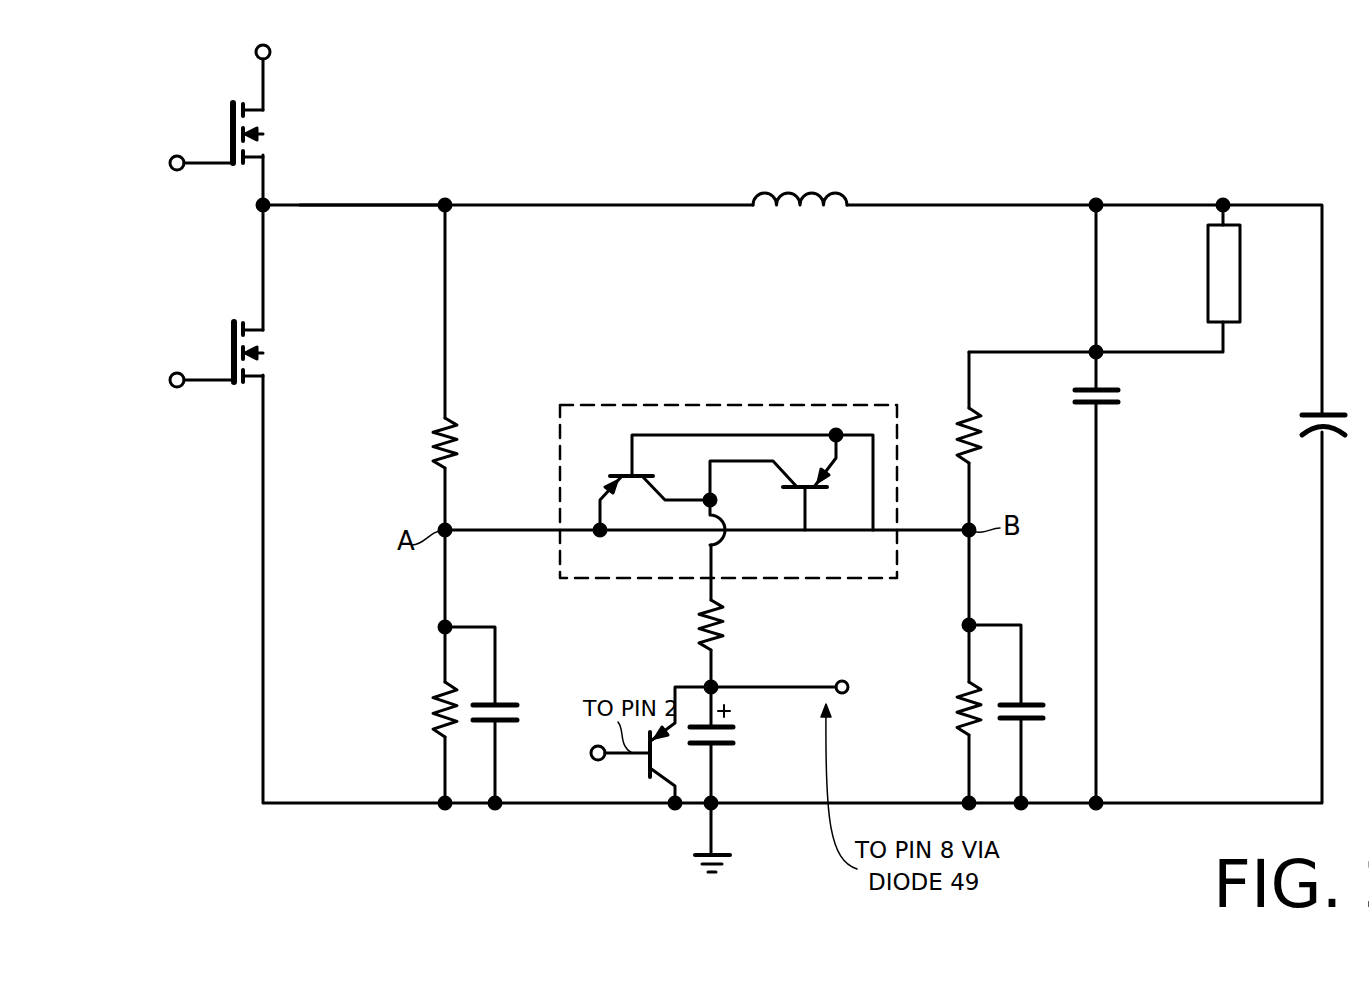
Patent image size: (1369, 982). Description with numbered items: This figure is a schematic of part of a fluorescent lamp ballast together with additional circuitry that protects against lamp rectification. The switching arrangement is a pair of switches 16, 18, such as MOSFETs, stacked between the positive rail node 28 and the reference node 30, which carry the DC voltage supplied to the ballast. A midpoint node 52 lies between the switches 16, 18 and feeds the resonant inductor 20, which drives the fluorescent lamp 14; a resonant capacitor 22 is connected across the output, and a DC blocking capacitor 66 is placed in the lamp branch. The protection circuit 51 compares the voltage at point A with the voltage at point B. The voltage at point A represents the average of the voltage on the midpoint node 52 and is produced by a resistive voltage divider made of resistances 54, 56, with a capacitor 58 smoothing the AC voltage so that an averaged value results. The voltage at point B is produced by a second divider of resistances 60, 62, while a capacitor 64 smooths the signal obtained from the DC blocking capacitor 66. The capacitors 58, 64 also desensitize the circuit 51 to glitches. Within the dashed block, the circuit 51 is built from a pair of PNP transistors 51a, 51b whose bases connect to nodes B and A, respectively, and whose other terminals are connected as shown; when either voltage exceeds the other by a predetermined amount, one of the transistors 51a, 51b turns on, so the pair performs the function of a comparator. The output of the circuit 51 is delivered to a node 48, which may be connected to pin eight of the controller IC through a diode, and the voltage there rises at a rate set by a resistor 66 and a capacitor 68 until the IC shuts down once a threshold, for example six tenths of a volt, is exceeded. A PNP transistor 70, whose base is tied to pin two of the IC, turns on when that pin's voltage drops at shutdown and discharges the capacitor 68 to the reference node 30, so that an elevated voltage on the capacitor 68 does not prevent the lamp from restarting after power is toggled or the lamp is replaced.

The fluorescent lamp 14 is at (1208, 272).
The switch 16 is at (274, 127).
The switch 18 is at (274, 349).
The resonant inductor 20 is at (812, 192).
The resonant capacitor 22 is at (1335, 434).
The positive rail node 28 is at (255, 55).
The reference node 30 is at (695, 855).
The node 48 is at (838, 681).
The circuit 51 is at (722, 402).
The PNP transistor 51a is at (617, 472).
The PNP transistor 51b is at (812, 490).
The midpoint node 52 is at (355, 203).
The resistance 54 is at (435, 440).
The resistance 56 is at (440, 690).
The capacitor 58 is at (498, 705).
The resistance 60 is at (980, 430).
The resistance 62 is at (958, 720).
The capacitor 64 is at (1032, 722).
The DC blocking capacitor / resistor 66 is at (697, 615).
The capacitor 68 is at (730, 745).
The PNP transistor 70 is at (648, 770).